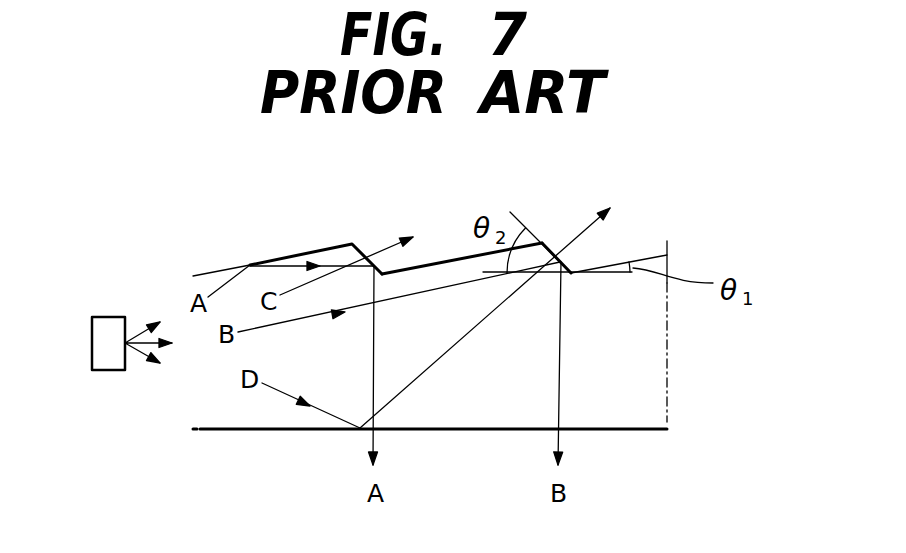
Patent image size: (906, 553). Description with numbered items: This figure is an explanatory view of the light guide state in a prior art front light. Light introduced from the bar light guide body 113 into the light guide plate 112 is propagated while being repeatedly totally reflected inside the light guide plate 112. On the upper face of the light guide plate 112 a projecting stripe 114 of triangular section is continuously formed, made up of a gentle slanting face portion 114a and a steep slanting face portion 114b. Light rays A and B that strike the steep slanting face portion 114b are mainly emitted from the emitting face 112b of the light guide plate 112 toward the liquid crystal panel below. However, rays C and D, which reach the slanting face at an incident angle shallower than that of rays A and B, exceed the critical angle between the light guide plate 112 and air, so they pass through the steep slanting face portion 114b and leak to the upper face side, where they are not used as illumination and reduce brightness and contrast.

The light guide plate 112 is at (484, 386).
The emitting face 112b is at (630, 431).
The bar light guide body 113 is at (108, 360).
The projecting stripe 114 is at (430, 221).
The gentle slanting face portion 114a is at (437, 263).
The steep slanting face portion 114b is at (556, 256).